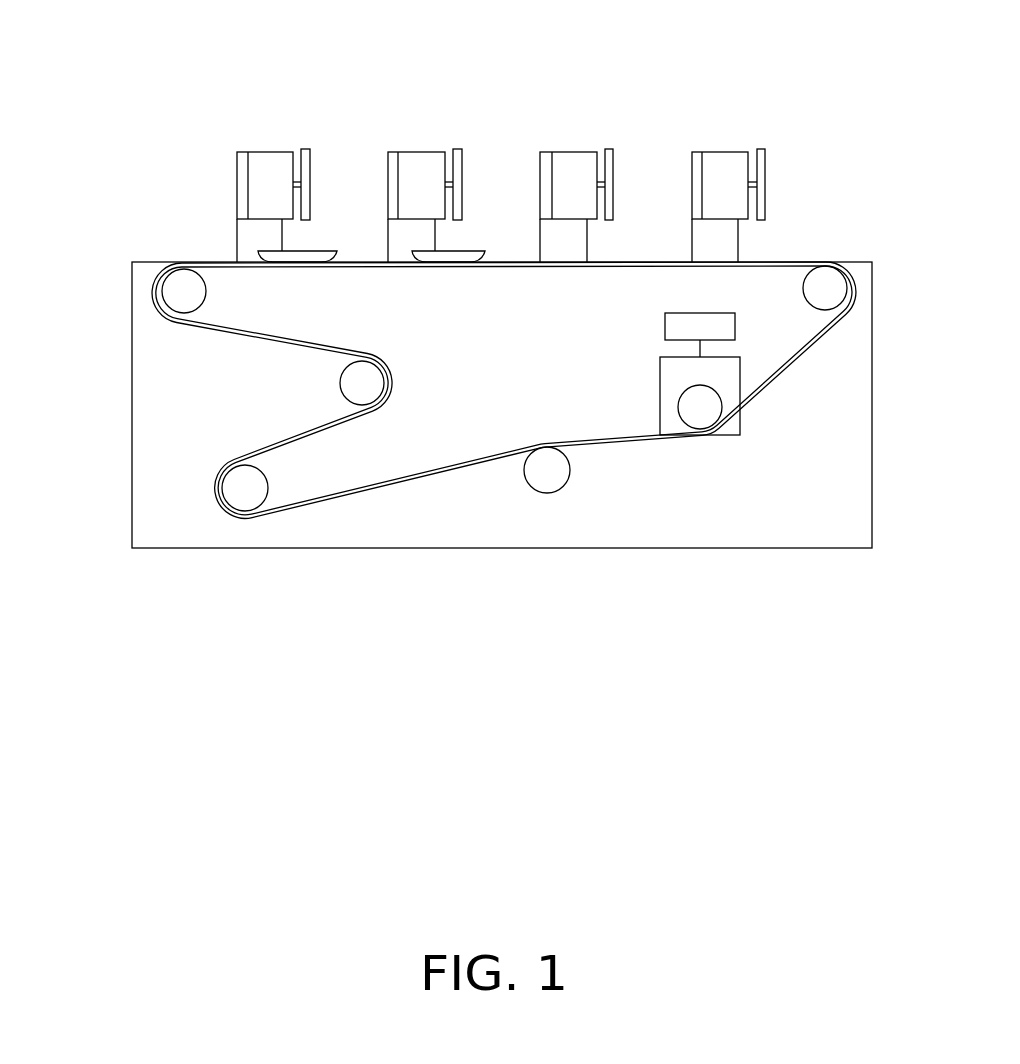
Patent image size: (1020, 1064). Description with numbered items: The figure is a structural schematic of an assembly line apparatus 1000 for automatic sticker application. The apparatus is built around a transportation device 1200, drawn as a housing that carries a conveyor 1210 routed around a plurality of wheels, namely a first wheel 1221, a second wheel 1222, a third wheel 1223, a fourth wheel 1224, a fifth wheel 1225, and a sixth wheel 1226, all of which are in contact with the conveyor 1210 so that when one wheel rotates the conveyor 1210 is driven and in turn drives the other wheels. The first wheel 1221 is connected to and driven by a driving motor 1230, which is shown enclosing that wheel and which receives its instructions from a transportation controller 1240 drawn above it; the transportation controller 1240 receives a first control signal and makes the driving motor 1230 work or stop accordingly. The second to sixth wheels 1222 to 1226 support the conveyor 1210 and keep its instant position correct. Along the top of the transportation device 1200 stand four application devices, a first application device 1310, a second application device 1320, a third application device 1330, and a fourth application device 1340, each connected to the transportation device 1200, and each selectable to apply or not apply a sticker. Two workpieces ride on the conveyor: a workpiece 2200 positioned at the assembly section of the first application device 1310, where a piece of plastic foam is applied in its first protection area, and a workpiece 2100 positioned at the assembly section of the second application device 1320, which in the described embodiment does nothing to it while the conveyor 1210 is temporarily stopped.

The assembly line apparatus 1000 is at (614, 22).
The transportation device 1200 is at (170, 378).
The conveyor 1210 is at (800, 355).
The first wheel 1221 is at (700, 405).
The second wheel 1222 is at (828, 280).
The third wheel 1223 is at (180, 290).
The fourth wheel 1224 is at (360, 385).
The fifth wheel 1225 is at (245, 480).
The sixth wheel 1226 is at (551, 474).
The driving motor 1230 is at (677, 377).
The transportation controller 1240 is at (664, 326).
The first application device 1310 is at (272, 150).
The second application device 1320 is at (428, 150).
The third application device 1330 is at (573, 150).
The fourth application device 1340 is at (727, 150).
The workpiece 2100 is at (452, 249).
The workpiece 2200 is at (275, 256).